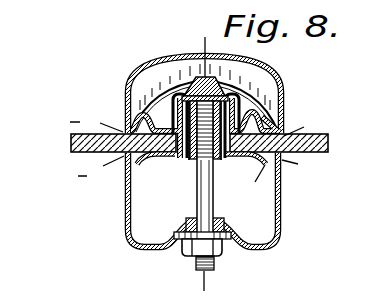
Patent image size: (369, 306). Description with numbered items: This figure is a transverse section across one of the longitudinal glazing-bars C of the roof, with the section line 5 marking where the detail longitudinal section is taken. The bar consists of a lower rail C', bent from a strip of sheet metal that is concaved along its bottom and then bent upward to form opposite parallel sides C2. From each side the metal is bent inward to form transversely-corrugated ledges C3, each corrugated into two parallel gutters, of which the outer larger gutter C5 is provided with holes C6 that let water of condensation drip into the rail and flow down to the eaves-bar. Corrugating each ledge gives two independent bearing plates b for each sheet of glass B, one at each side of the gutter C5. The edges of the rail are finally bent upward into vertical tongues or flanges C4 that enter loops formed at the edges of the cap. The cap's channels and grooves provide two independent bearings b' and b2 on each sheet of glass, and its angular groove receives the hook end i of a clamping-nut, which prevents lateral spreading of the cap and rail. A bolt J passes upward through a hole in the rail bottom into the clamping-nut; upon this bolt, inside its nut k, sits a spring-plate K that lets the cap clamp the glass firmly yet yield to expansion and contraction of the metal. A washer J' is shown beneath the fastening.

The sheet of glass B is at (70, 146).
The bearing plate b is at (193, 178).
The cap bearing b' is at (194, 124).
The cap bearing b2 is at (162, 130).
The longitudinal glazing-bar C is at (203, 90).
The rail C' is at (205, 87).
The side of rail C2 is at (128, 117).
The transversely-corrugated ledge C3 is at (178, 156).
The vertical tongue or flange C4 is at (175, 102).
The outer gutter C5 is at (149, 163).
The hole C6 is at (279, 174).
The hook end of clamping-nut i is at (279, 96).
The bolt J is at (199, 167).
The washer J' is at (198, 222).
The spring-plate K is at (168, 256).
The bolt-nut k is at (222, 253).
The section line 5 is at (205, 163).